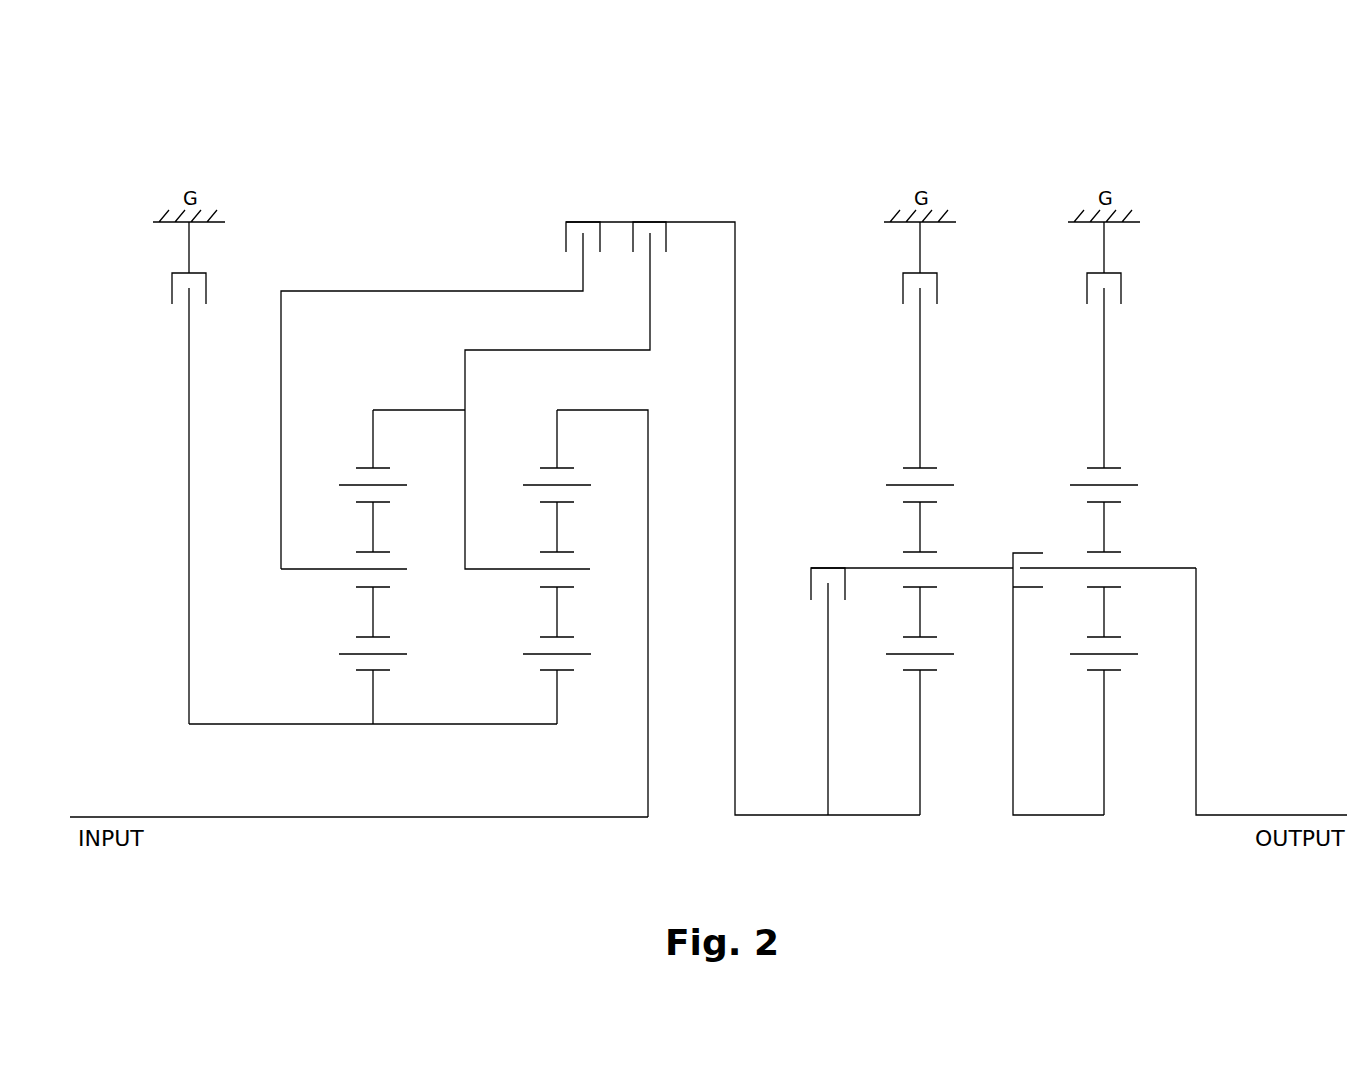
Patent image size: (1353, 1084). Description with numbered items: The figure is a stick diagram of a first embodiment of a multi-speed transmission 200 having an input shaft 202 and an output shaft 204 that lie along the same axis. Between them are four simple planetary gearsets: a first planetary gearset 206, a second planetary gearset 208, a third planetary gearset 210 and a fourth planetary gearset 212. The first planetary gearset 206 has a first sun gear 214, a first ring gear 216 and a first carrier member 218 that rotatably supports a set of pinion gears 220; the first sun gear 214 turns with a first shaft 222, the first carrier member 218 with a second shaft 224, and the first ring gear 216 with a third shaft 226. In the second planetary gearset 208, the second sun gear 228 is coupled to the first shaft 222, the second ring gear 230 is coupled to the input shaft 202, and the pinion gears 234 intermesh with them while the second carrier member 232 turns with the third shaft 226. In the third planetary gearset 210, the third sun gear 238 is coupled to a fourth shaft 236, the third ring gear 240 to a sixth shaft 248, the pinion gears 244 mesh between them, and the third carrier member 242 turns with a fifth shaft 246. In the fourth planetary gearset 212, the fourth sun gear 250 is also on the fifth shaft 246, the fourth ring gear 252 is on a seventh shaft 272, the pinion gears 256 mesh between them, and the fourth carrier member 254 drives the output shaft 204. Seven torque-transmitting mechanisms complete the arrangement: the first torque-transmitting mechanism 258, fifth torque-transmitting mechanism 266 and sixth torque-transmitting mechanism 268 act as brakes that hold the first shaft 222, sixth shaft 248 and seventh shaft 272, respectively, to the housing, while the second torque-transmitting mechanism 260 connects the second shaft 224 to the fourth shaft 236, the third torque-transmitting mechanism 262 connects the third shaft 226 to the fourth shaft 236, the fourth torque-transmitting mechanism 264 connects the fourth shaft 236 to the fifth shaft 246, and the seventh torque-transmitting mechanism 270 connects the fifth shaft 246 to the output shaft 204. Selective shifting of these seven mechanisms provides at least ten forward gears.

The multi-speed transmission 200 is at (137, 158).
The input shaft 202 is at (123, 817).
The output shaft 204 is at (1283, 815).
The first planetary gearset 206 is at (372, 735).
The second planetary gearset 208 is at (553, 735).
The third planetary gearset 210 is at (918, 823).
The fourth planetary gearset 212 is at (1104, 823).
The first sun gear 214 is at (344, 665).
The first ring gear 216 is at (350, 462).
The first carrier member 218 is at (346, 580).
The pinion gears 220 is at (384, 550).
The first shaft 222 is at (187, 505).
The second shaft 224 is at (337, 291).
The third shaft 226 is at (414, 410).
The second sun gear 228 is at (566, 682).
The second ring gear 230 is at (536, 462).
The second carrier member 232 is at (532, 582).
The pinion gears 234 is at (570, 550).
The fourth shaft 236 is at (736, 365).
The third sun gear 238 is at (905, 682).
The third ring gear 240 is at (934, 462).
The third carrier member 242 is at (934, 548).
The pinion gears 244 is at (908, 552).
The fifth shaft 246 is at (967, 568).
The sixth shaft 248 is at (920, 405).
The fourth sun gear 250 is at (1116, 682).
The fourth ring gear 252 is at (1118, 462).
The fourth carrier member 254 is at (1130, 552).
The pinion gears 256 is at (1112, 590).
The first torque-transmitting mechanism 258 is at (172, 290).
The second torque-transmitting mechanism 260 is at (565, 233).
The third torque-transmitting mechanism 262 is at (668, 240).
The fourth torque-transmitting mechanism 264 is at (811, 582).
The fifth torque-transmitting mechanism 266 is at (903, 290).
The sixth torque-transmitting mechanism 268 is at (1087, 290).
The seventh torque-transmitting mechanism 270 is at (1028, 587).
The seventh shaft 272 is at (1106, 365).